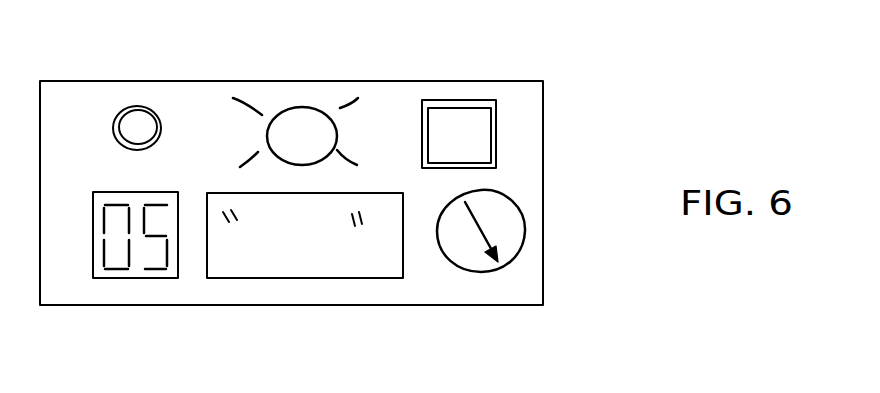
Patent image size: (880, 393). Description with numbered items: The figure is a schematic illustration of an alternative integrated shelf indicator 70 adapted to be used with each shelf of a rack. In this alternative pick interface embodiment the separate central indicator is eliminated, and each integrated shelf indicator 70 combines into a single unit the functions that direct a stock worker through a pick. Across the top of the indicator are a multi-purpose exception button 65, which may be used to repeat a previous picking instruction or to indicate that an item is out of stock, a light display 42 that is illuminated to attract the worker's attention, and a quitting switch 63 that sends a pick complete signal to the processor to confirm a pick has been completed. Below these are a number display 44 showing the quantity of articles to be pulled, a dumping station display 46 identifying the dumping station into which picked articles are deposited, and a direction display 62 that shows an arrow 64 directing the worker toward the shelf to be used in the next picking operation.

The integrated shelf indicator 70 is at (470, 82).
The multi-purpose exception button 65 is at (140, 123).
The light indicator 42 is at (305, 123).
The quitting switch 63 is at (475, 135).
The numeric display 44 is at (137, 270).
The text display 46 is at (308, 278).
The direction display 62 is at (528, 280).
The arrow 64 is at (477, 235).